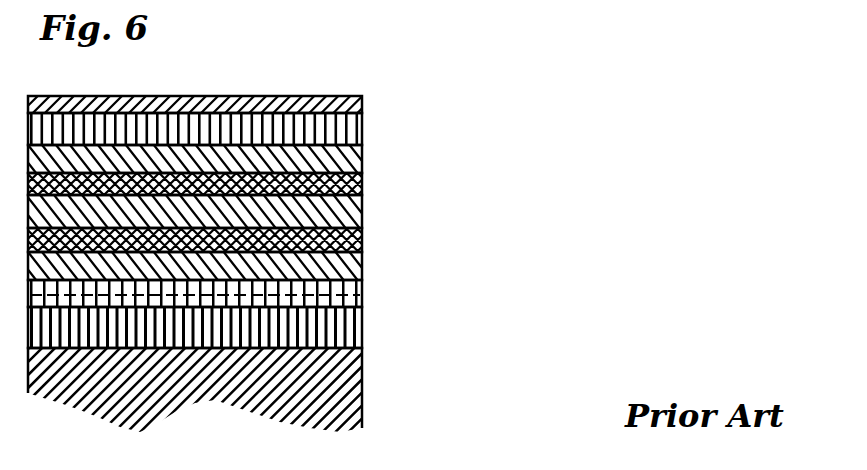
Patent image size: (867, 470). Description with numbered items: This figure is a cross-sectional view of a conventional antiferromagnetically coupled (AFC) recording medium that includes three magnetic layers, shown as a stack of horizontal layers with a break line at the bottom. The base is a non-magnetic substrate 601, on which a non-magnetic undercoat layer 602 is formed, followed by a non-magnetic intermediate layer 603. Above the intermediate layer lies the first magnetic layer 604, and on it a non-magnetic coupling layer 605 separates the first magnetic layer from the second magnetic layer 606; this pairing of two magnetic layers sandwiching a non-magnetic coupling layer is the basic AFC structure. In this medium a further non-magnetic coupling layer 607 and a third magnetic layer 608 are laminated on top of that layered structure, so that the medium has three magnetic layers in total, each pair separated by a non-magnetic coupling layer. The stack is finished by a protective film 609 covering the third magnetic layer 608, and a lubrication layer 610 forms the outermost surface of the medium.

The non-magnetic substrate 601 is at (362, 381).
The non-magnetic undercoat layer 602 is at (362, 330).
The non-magnetic intermediate layer 603 is at (362, 296).
The first magnetic layer 604 is at (362, 265).
The non-magnetic coupling layer 605 is at (362, 240).
The second magnetic layer 606 is at (362, 208).
The non-magnetic coupling layer 607 is at (362, 185).
The third magnetic layer 608 is at (362, 156).
The protective film 609 is at (362, 123).
The lubrication layer 610 is at (362, 95).